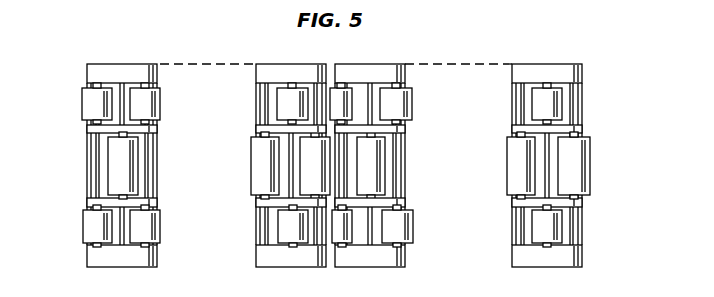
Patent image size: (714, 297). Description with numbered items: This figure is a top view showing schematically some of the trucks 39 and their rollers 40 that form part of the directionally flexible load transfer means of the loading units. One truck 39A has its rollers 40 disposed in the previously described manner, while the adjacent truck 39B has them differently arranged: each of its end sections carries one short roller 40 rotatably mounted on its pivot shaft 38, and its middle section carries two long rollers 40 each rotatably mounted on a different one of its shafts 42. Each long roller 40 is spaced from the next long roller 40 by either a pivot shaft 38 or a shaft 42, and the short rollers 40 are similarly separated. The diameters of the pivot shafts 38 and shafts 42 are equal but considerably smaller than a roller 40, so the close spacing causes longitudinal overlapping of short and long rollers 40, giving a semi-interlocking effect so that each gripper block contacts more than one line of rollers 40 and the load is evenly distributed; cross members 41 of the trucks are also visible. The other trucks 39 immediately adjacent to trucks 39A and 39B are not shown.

The pivot shaft 38 is at (122, 100).
The truck 39 is at (114, 72).
The truck 39A is at (353, 69).
The truck 39B is at (272, 71).
The roller 40 is at (153, 107).
The cross bar 41 is at (145, 130).
The shaft 42 is at (265, 100).